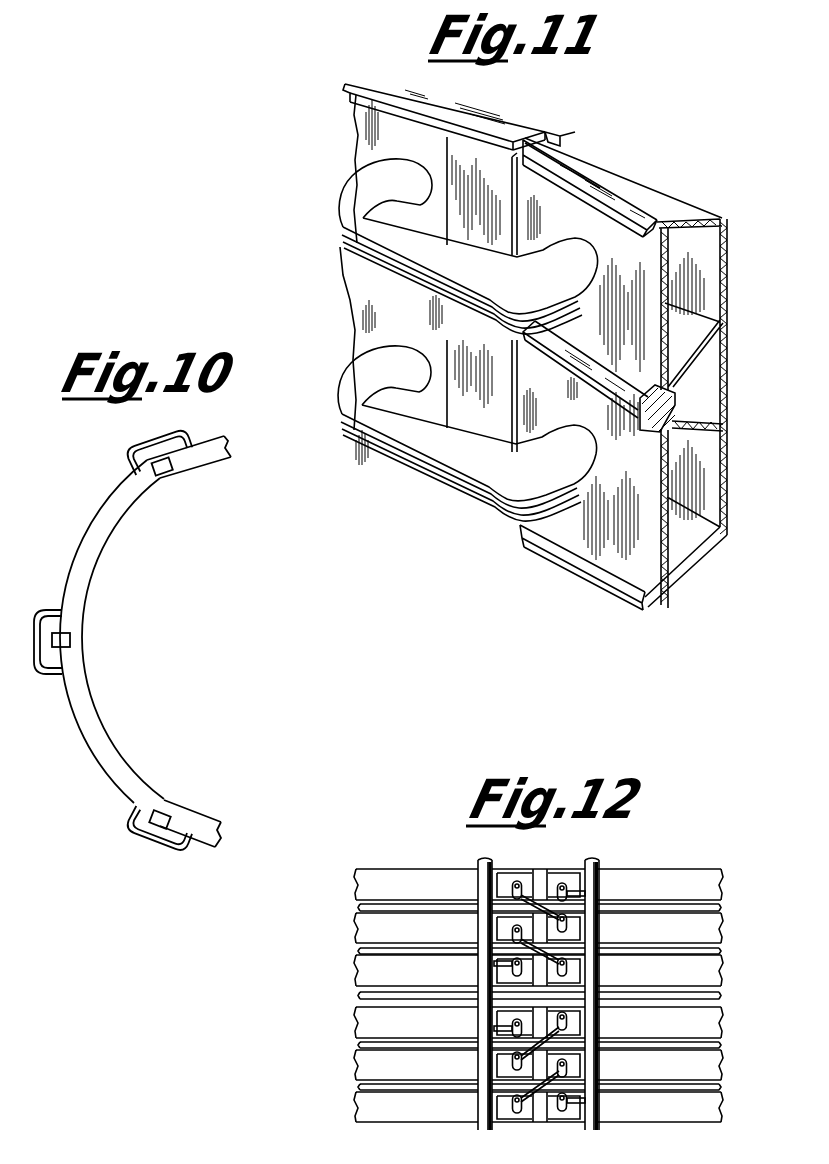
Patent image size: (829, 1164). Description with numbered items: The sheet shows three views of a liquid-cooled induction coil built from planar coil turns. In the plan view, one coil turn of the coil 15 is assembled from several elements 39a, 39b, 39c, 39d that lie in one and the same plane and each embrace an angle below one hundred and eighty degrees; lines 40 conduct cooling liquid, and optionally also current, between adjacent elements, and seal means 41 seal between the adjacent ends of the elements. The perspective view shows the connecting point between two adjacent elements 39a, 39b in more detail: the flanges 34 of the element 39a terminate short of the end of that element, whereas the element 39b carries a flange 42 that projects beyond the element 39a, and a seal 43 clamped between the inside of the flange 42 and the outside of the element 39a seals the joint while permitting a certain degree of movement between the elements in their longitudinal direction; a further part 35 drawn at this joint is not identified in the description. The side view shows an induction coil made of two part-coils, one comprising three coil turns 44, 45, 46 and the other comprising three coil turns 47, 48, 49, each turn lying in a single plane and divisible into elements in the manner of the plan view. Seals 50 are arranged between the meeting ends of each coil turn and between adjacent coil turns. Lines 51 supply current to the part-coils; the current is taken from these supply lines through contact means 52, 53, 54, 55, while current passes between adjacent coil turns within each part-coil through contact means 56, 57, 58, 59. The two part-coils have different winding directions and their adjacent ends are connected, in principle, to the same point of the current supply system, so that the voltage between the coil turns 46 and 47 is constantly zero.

In FIG. 10, the coil 15 is at (172, 641).
In FIG. 11, the flanges 34 is at (347, 89).
In FIG. 11, the joint 35 is at (678, 394).
In FIG. 10, the element 39a is at (200, 825).
In FIG. 11, the element 39a is at (682, 210).
In FIG. 10, the element 39b is at (108, 748).
In FIG. 11, the element 39b is at (360, 140).
In FIG. 10, the element 39c is at (100, 540).
In FIG. 10, the element 39d is at (222, 446).
In FIG. 10, the lines 40 is at (131, 458).
In FIG. 11, the lines 40 is at (343, 207).
In FIG. 12, the lines 40 is at (565, 1015).
In FIG. 10, the seal means 41 is at (166, 470).
In FIG. 11, the flange 42 is at (567, 163).
In FIG. 11, the seal 43 is at (550, 140).
In FIG. 12, the coil turn 44 is at (362, 1105).
In FIG. 12, the coil turn 45 is at (362, 1063).
In FIG. 12, the coil turn 46 is at (362, 1023).
In FIG. 12, the coil turn 47 is at (362, 975).
In FIG. 12, the coil turn 48 is at (362, 930).
In FIG. 12, the coil turn 49 is at (362, 885).
In FIG. 12, the seals 50 is at (540, 876).
In FIG. 12, the lines 51 is at (480, 870).
In FIG. 12, the contact means 52 is at (573, 1103).
In FIG. 12, the contact means 53 is at (500, 1029).
In FIG. 12, the contact means 54 is at (500, 965).
In FIG. 12, the contact means 55 is at (573, 883).
In FIG. 12, the contact means 56 is at (515, 1097).
In FIG. 12, the contact means 57 is at (517, 1052).
In FIG. 12, the contact means 58 is at (572, 938).
In FIG. 12, the contact means 59 is at (530, 905).